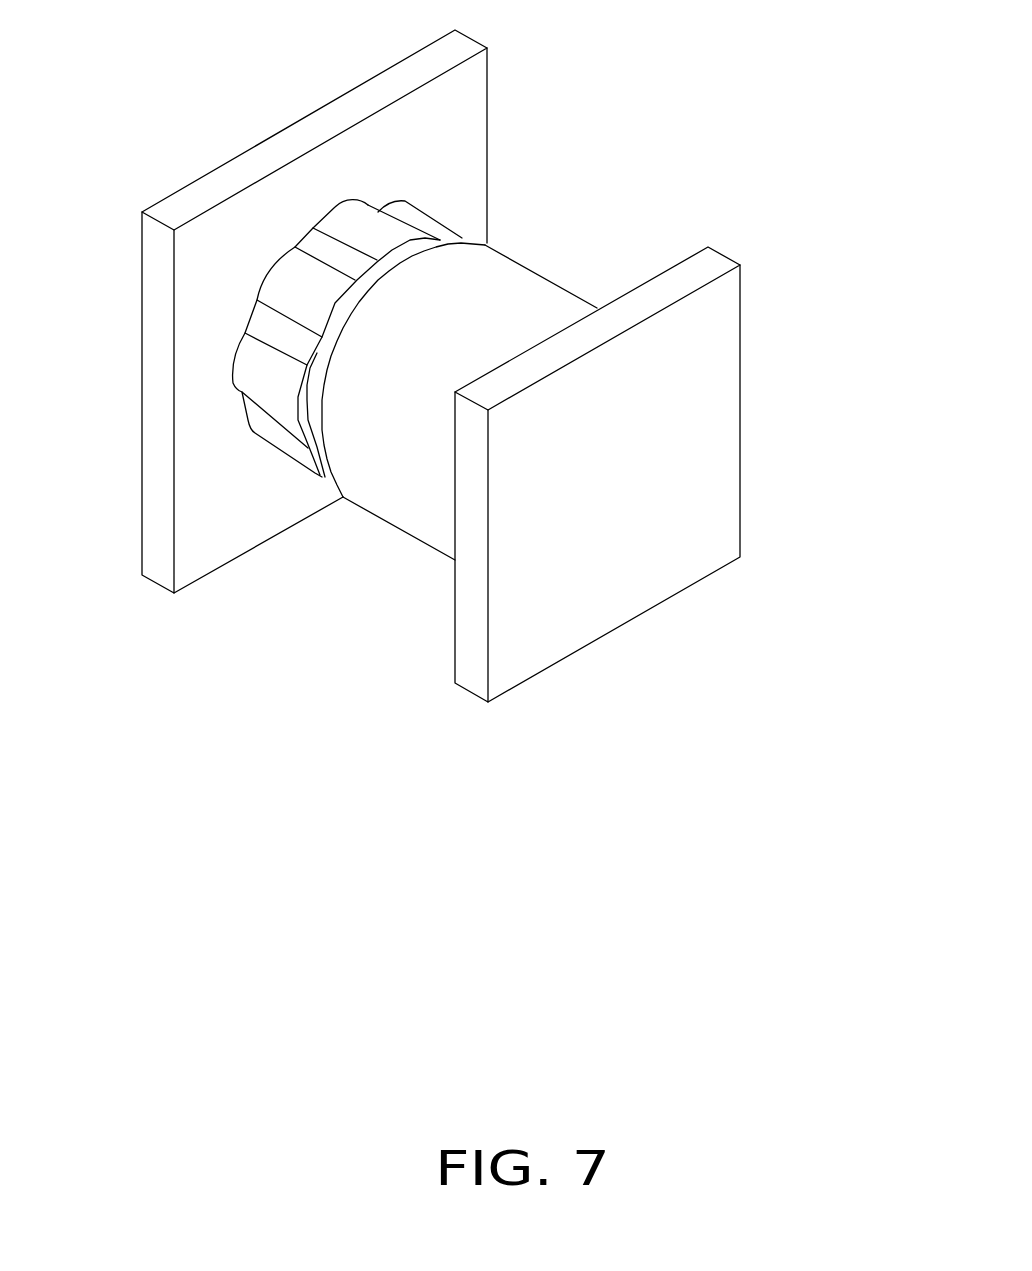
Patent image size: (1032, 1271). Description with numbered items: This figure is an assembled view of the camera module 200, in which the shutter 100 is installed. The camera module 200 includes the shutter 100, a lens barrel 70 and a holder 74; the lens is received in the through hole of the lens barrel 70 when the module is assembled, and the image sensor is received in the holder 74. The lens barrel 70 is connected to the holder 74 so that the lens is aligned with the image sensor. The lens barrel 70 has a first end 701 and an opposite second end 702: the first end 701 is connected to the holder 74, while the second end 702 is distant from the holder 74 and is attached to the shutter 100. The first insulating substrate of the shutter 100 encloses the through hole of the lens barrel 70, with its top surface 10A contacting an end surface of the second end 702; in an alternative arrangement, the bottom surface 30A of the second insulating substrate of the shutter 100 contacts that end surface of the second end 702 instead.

The camera module 200 is at (464, 366).
The bottom surface 30A is at (272, 311).
The shutter 100 is at (272, 311).
The top surface 10A is at (200, 292).
The lens barrel 70 is at (401, 407).
The second end 702 is at (273, 383).
The first end 701 is at (408, 488).
The holder 74 is at (668, 290).